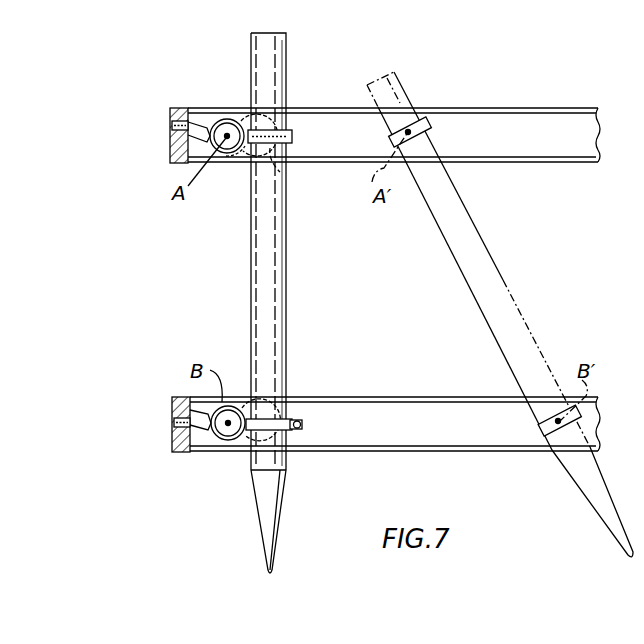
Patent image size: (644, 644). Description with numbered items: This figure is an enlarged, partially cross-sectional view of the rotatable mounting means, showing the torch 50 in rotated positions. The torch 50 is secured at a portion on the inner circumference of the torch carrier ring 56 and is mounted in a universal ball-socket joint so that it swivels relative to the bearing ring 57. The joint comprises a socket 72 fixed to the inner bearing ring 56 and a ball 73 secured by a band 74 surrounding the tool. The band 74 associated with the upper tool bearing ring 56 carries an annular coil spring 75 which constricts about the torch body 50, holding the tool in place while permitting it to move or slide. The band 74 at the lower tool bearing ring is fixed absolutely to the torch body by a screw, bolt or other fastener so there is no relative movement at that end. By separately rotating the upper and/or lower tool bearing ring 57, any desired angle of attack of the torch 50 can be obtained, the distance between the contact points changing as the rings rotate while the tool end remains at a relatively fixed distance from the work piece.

The torch 50 is at (287, 273).
The inner ring 56 is at (170, 125).
The outer race ring 57 is at (172, 415).
The socket 72 is at (205, 112).
The ball 73 is at (247, 160).
The band 74 is at (292, 137).
The annular coil spring 75 is at (280, 172).